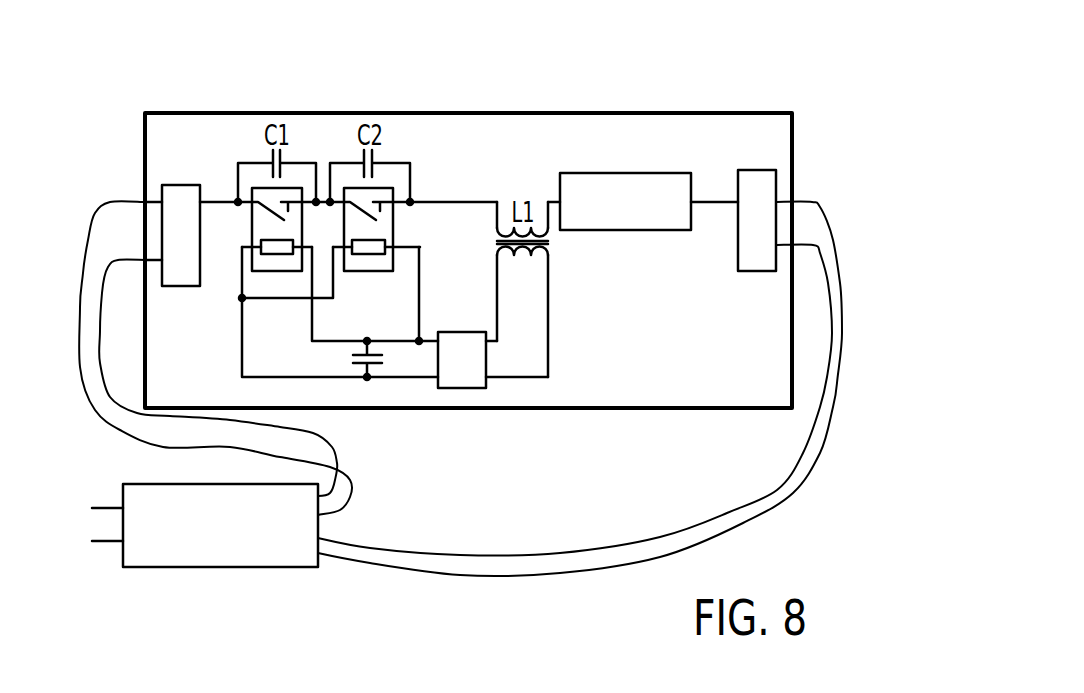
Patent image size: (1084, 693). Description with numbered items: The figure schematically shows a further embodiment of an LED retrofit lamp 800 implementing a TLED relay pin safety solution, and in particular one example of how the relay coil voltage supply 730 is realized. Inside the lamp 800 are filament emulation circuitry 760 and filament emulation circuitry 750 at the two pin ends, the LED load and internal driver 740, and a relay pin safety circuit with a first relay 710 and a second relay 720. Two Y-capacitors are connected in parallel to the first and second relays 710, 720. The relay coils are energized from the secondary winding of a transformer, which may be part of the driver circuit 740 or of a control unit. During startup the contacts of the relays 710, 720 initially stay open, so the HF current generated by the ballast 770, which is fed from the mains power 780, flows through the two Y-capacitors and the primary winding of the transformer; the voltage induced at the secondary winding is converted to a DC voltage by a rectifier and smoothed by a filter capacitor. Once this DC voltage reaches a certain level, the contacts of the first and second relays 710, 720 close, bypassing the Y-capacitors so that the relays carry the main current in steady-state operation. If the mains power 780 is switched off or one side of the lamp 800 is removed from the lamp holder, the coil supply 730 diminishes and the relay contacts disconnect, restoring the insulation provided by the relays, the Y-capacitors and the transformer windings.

The lamp 800 is at (661, 113).
The first relay 710 is at (252, 215).
The second relay 720 is at (395, 223).
The relay voltage supply 730 is at (412, 408).
The LED load and internal driver 740 is at (627, 230).
The filament emulation circuitry 750 is at (757, 271).
The filament emulation circuitry 760 is at (180, 185).
The ballast 770 is at (222, 567).
The mains power 780 is at (97, 523).